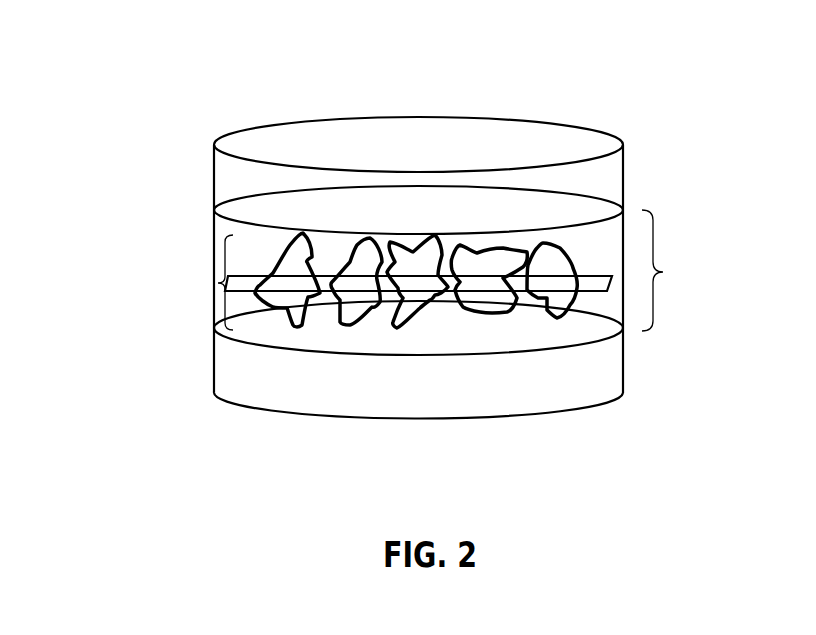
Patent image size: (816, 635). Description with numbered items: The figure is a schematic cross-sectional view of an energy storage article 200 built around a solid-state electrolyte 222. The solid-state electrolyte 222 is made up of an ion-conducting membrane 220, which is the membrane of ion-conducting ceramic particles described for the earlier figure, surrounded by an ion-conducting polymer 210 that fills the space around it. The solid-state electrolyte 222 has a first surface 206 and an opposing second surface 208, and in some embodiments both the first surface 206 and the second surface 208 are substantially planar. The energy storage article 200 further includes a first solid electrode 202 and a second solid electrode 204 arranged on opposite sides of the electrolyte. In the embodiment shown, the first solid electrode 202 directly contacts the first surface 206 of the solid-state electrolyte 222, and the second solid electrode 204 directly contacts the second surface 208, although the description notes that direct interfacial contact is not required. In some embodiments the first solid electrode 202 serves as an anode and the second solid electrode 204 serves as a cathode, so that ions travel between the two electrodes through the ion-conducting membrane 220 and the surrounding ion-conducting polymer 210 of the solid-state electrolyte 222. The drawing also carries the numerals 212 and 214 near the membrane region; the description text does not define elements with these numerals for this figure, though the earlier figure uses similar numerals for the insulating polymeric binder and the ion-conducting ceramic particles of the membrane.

The energy storage article 200 is at (118, 108).
The first solid electrode 202 is at (246, 177).
The second solid electrode 204 is at (233, 372).
The first surface 206 is at (577, 232).
The second surface 208 is at (552, 338).
The ion-conducting polymer 210 is at (240, 228).
The support bar 212 is at (518, 283).
The food pieces 214 is at (575, 260).
The ion-conducting membrane 220 is at (202, 282).
The solid-state electrolyte 222 is at (676, 270).